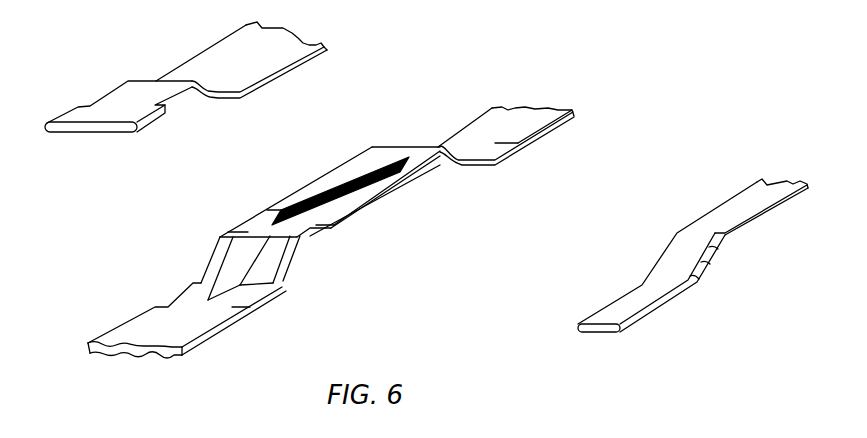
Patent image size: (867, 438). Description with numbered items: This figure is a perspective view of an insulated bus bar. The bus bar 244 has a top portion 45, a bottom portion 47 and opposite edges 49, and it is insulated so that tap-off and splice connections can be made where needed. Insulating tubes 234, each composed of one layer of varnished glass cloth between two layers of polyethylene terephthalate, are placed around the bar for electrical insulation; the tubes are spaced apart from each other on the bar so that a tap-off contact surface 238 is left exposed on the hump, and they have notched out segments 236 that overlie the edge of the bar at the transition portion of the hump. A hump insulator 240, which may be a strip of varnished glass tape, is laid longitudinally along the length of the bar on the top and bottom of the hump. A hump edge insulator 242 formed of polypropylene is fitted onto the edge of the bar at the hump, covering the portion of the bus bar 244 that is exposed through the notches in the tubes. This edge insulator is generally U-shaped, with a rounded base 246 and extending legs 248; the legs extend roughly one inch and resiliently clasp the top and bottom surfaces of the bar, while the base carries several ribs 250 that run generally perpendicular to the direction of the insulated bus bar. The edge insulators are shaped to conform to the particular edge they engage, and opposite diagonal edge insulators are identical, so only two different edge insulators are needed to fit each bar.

The base plate / strip 234 is at (70, 115).
The notched out segments 236 is at (107, 95).
The tap-off contact surface 238 is at (380, 187).
The hump insulator 240 is at (330, 190).
The top portion 45 is at (385, 179).
The bottom portion 47 is at (362, 212).
The opposite edges 49 is at (292, 193).
The hump edge insulator 242 is at (673, 232).
The bus bar 244 is at (206, 268).
The rounded base 246 is at (640, 317).
The extending legs 248 is at (603, 312).
The ribs 250 is at (713, 252).